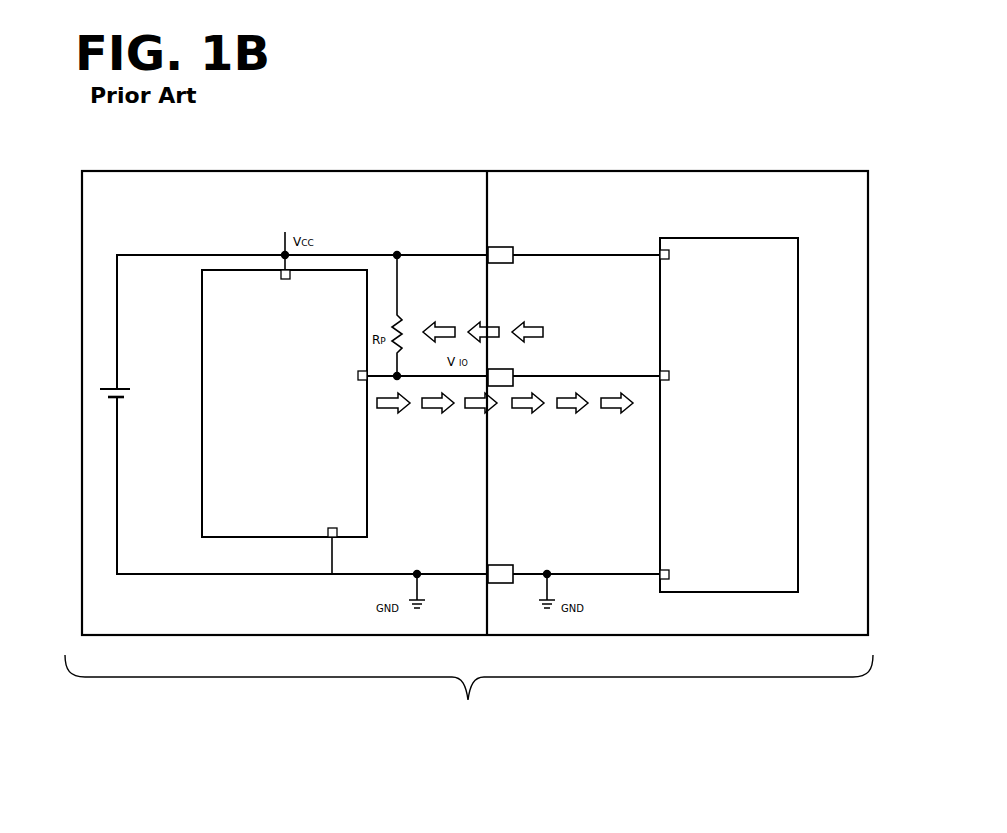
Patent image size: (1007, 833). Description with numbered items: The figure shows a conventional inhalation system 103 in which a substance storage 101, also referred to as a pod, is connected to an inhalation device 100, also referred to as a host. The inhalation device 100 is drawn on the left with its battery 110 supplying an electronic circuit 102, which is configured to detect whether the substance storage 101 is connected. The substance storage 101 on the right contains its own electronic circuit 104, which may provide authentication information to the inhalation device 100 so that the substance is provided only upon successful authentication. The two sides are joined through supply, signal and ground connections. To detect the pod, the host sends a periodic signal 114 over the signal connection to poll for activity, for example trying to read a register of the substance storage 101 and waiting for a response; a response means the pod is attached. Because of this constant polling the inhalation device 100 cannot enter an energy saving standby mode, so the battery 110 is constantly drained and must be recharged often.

The inhalation device 100 is at (300, 148).
The substance storage 101 is at (777, 148).
The electronic circuit 102 is at (284, 403).
The inhalation system 103 is at (469, 707).
The electronic circuit 104 is at (729, 415).
The battery 110 is at (114, 398).
The periodic signal 114 is at (487, 402).